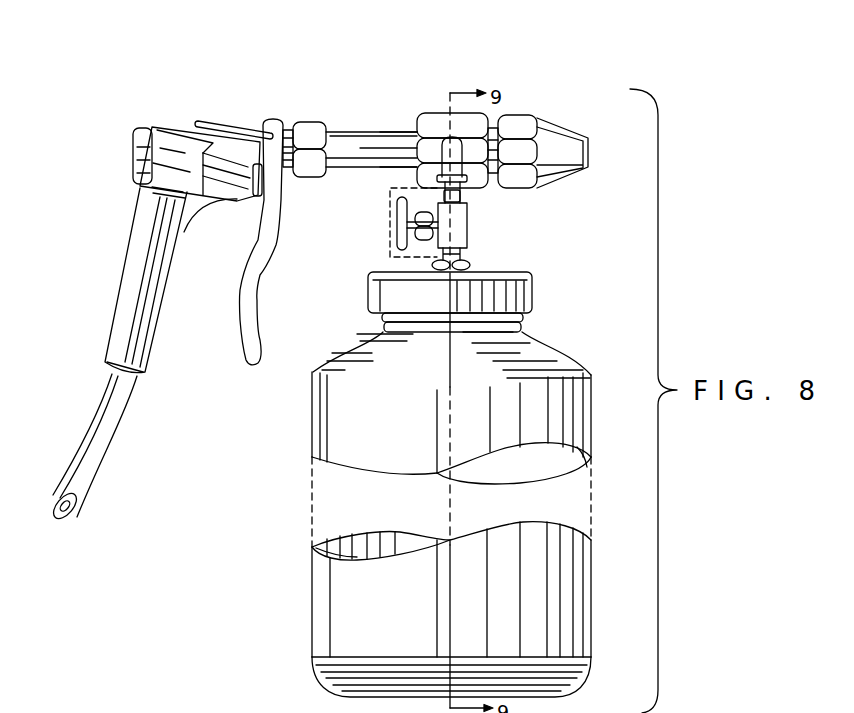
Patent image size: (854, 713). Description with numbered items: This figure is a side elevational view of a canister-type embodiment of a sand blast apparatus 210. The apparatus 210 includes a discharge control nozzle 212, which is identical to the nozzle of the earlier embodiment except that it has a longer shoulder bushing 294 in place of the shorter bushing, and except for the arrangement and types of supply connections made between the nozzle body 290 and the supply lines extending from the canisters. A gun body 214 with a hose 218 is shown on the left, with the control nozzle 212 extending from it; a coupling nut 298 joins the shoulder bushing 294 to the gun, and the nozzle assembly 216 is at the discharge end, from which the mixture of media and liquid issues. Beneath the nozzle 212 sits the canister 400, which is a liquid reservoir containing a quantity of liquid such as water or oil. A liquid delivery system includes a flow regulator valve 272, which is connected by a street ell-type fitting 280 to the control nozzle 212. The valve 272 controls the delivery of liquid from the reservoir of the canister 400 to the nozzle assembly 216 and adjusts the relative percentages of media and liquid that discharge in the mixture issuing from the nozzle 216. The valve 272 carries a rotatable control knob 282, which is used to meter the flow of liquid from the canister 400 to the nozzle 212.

The sand blast apparatus 210 is at (178, 58).
The discharge control nozzle 212 is at (385, 96).
The gun body 214 is at (183, 117).
The nozzle assembly 216 is at (528, 94).
The supply hose 218 is at (93, 443).
The flow regulator valve 272 is at (458, 222).
The street ell-type fitting 280 is at (407, 157).
The rotatable control knob 282 is at (392, 240).
The nozzle body 290 is at (428, 117).
The shoulder bushing 294 is at (335, 120).
The coupling nut 298 is at (307, 127).
The canister 400 is at (546, 280).